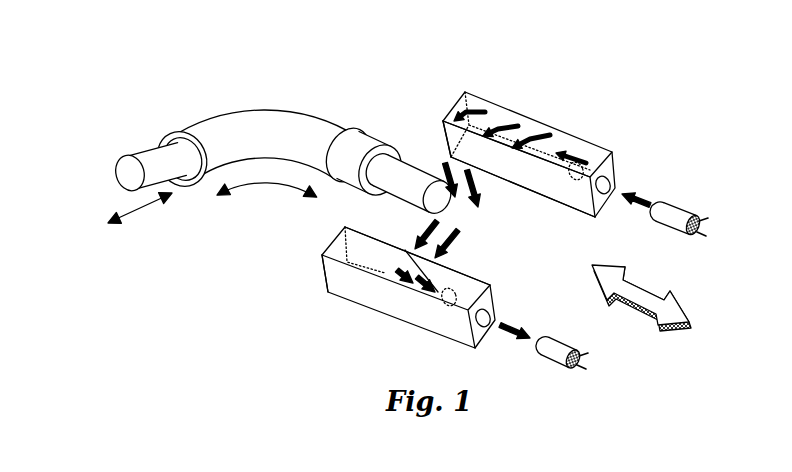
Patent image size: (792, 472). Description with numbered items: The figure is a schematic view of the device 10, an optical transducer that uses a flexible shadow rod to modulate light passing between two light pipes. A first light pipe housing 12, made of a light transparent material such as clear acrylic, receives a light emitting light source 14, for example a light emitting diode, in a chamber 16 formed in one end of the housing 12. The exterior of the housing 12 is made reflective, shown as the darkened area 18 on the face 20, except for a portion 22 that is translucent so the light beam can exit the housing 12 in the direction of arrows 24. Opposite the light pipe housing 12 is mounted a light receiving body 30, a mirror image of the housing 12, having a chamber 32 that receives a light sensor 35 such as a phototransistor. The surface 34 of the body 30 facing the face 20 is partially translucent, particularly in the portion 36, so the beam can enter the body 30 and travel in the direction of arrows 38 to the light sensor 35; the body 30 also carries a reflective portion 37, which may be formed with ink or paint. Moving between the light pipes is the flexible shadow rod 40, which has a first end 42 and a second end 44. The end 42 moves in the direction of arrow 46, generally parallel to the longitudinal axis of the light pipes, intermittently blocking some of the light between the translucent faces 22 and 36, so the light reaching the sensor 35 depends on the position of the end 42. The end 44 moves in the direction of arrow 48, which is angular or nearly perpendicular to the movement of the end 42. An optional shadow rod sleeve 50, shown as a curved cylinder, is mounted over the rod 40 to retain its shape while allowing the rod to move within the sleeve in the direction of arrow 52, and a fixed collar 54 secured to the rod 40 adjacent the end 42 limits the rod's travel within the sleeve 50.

The device 10 is at (395, 103).
The first light pipe housing 12 is at (523, 113).
The light emitting light source 14 is at (683, 208).
The chamber 16 is at (607, 184).
The darkened reflective area 18 is at (566, 197).
The face of the housing 20 is at (450, 142).
The translucent portion 22 is at (500, 173).
The arrows 24 is at (560, 128).
The light receiving body 30 is at (442, 338).
The chamber 32 is at (497, 320).
The surface of the body 34 is at (447, 270).
The light sensor 35 is at (567, 340).
The translucent portion 36 is at (367, 236).
The reflective portion 37 is at (468, 278).
The arrows 38 is at (368, 292).
The flexible shadow rod 40 is at (145, 142).
The first end of the shadow rod 42 is at (400, 192).
The second end of the shadow rod 44 is at (167, 176).
The arrow 46 is at (648, 290).
The arrow 48 is at (143, 208).
The shadow rod sleeve 50 is at (242, 117).
The arrow 52 is at (282, 188).
The fixed collar 54 is at (364, 140).